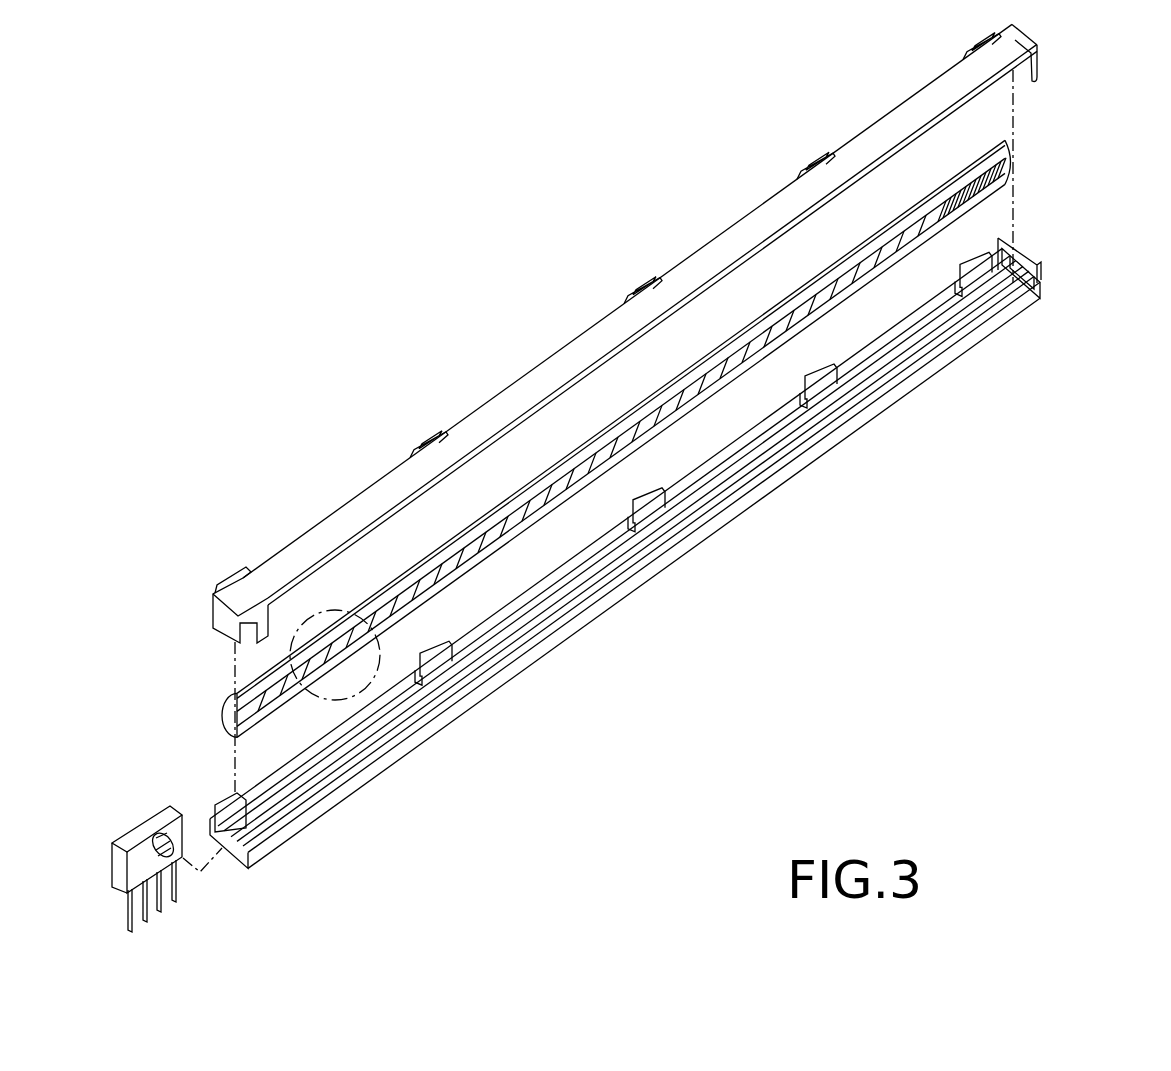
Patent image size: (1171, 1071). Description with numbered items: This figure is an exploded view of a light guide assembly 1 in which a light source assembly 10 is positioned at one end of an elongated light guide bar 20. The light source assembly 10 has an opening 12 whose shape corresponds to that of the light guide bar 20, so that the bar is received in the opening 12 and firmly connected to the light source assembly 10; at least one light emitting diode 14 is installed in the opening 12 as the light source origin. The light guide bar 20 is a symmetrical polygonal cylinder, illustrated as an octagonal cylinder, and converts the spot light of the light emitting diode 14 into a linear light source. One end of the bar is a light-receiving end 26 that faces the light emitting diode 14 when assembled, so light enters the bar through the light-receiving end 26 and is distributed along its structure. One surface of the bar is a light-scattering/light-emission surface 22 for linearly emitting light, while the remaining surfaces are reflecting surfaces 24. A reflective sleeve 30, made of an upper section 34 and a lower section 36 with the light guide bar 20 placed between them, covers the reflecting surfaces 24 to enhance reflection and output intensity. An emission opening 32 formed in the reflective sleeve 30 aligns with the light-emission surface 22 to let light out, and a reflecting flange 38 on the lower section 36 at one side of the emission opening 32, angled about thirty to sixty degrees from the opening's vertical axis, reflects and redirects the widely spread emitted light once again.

The light guide assembly 1 is at (476, 266).
The light source assembly 10 is at (147, 812).
The opening 12 is at (168, 832).
The light emitting diode 14 is at (177, 876).
The light guide bar 20 is at (1012, 158).
The light-scattering/light-emission surface 22 is at (430, 582).
The reflecting surfaces 24 is at (512, 504).
The light-receiving end 26 is at (228, 716).
The reflective sleeve 30 is at (1040, 47).
The emission opening 32 is at (277, 607).
The upper section 34 is at (362, 495).
The lower section 36 is at (457, 728).
The reflecting flange 38 is at (330, 793).